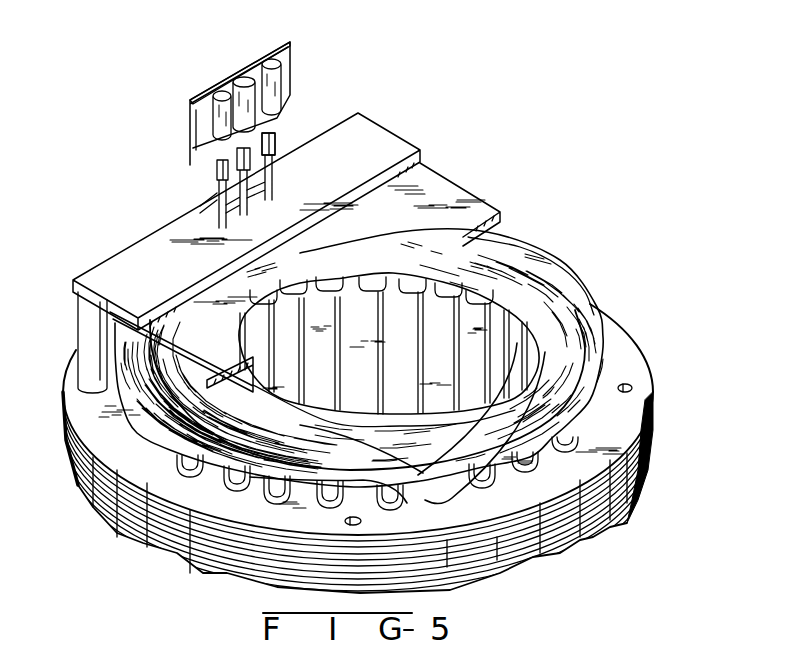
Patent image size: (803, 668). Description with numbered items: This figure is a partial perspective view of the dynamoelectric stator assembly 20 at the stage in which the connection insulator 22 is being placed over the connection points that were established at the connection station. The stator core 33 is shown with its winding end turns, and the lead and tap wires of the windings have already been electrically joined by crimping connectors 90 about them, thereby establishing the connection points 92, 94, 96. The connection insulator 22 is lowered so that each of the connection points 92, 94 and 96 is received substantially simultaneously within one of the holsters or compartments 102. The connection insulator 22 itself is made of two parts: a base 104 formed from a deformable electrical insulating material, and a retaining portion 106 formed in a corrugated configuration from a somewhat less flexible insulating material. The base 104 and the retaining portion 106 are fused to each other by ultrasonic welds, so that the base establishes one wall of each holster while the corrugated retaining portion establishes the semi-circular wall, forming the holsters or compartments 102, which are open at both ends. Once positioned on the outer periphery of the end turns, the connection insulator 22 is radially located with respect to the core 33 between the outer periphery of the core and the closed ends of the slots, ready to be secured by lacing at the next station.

The dynamoelectric stator assembly 20 is at (648, 321).
The connection insulator 22 is at (293, 60).
The core 33 is at (88, 500).
The connectors 90 is at (280, 156).
The connection point 92 is at (215, 172).
The connection point 94 is at (237, 155).
The connection point 96 is at (262, 140).
The holsters or compartments 102 is at (269, 60).
The base 104 is at (200, 93).
The retaining portion 106 is at (202, 107).